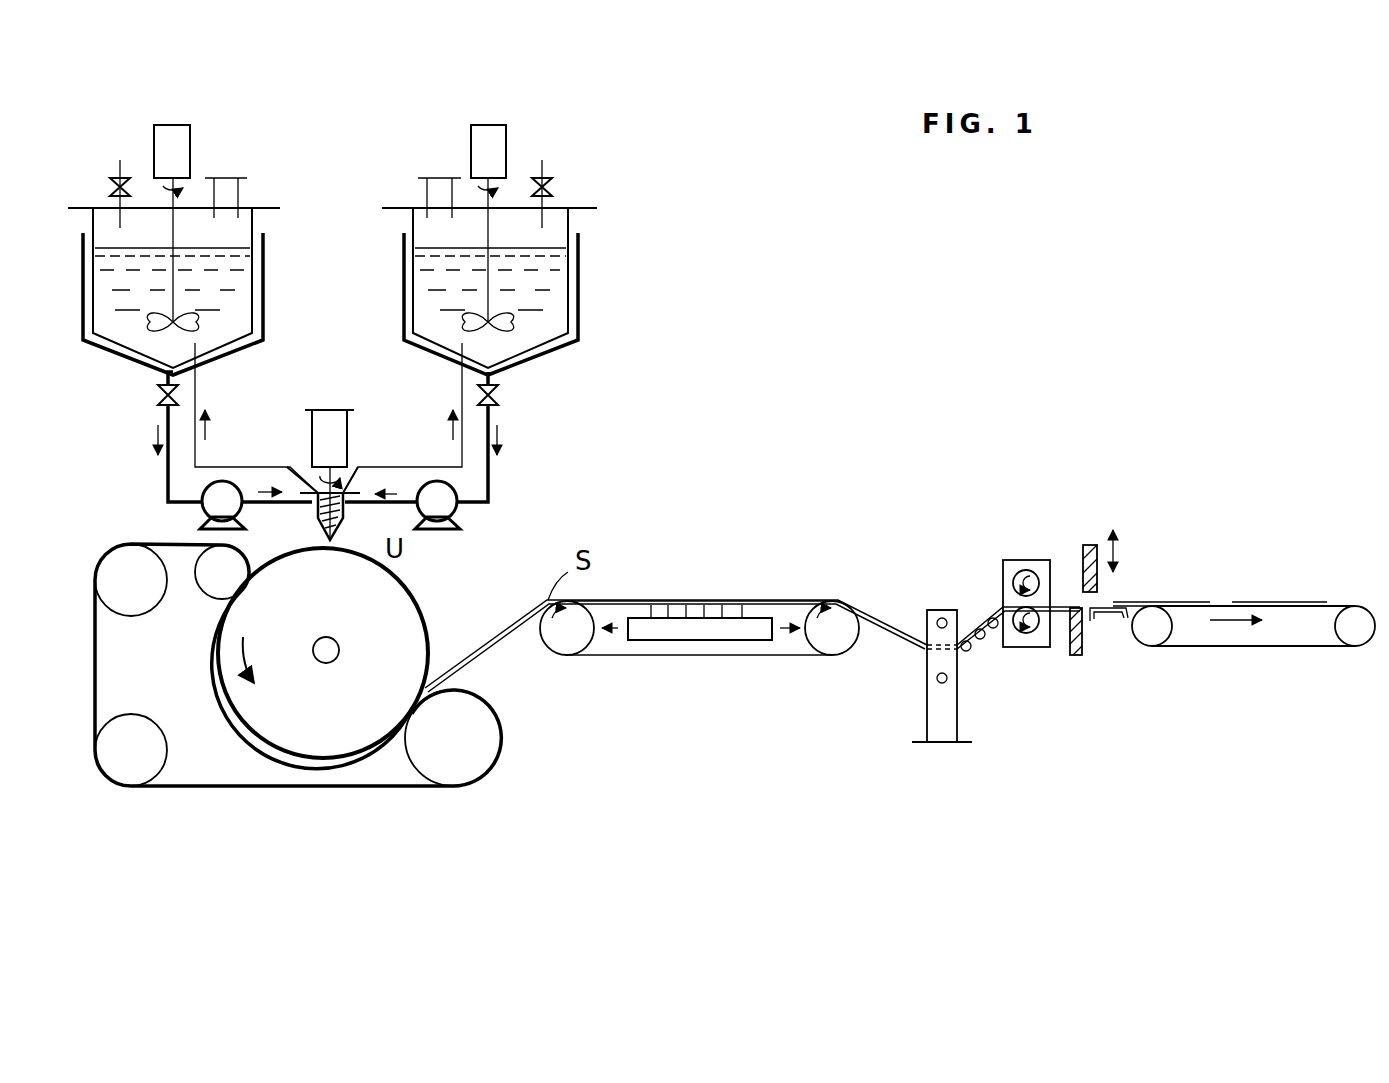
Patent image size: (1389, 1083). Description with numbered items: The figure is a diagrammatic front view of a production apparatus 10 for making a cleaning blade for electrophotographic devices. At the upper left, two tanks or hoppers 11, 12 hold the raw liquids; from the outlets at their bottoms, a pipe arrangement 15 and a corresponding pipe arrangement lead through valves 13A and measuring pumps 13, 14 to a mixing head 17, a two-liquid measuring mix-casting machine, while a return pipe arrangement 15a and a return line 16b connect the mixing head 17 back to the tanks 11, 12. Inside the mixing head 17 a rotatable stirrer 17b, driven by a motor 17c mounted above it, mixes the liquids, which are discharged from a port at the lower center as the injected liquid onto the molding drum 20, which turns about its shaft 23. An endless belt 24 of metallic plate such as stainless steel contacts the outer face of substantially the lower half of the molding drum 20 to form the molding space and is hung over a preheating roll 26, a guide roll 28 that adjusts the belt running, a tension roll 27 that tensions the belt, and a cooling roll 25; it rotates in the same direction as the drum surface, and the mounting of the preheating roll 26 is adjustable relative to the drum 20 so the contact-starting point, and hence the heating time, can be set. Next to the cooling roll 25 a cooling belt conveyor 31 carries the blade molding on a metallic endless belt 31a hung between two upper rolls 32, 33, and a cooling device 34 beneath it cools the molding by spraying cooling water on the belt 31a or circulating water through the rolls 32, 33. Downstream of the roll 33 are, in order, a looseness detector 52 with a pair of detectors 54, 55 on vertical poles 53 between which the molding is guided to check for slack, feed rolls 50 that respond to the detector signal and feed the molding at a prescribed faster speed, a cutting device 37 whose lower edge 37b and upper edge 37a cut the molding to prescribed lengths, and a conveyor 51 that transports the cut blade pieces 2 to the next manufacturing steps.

The sheet product 2 is at (1272, 603).
The production apparatus 10 is at (716, 530).
The tank 11 is at (263, 265).
The tank 12 is at (578, 265).
The measuring pump 13 is at (212, 505).
The valve 13A is at (158, 400).
The measuring pump 14 is at (447, 505).
The pipe arrangement 15 is at (165, 486).
The return pipe arrangement 15a is at (235, 467).
The return pipe 16b is at (410, 467).
The mixing head 17 is at (316, 514).
The rotatable stirrer 17b is at (345, 512).
The motor 17c is at (323, 410).
The molding drum 20 is at (413, 588).
The drum shaft 23 is at (328, 655).
The endless belt 24 is at (281, 788).
The cooling roll 25 is at (480, 770).
The preheating roll 26 is at (207, 585).
The tension roll 27 is at (133, 775).
The guide roll 28 is at (112, 580).
The cooling belt conveyor 31 is at (714, 664).
The metallic endless belt 31a is at (795, 658).
The upper roll 32 is at (557, 648).
The upper roll 33 is at (836, 648).
The cooling device 34 is at (738, 640).
The cutting device 37 is at (1111, 582).
The upper edge 37a is at (1082, 556).
The lower edge 37b is at (1080, 636).
The feed rolls 50 is at (1030, 625).
The conveyor 51 is at (1248, 648).
The looseness detector 52 is at (940, 655).
The pole 53 is at (937, 612).
The detector 54 is at (947, 620).
The detector 55 is at (950, 682).